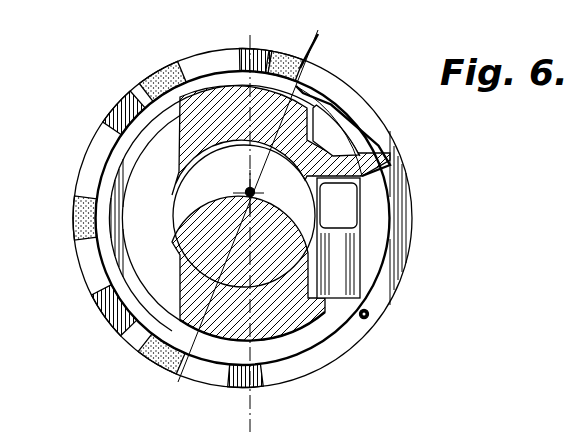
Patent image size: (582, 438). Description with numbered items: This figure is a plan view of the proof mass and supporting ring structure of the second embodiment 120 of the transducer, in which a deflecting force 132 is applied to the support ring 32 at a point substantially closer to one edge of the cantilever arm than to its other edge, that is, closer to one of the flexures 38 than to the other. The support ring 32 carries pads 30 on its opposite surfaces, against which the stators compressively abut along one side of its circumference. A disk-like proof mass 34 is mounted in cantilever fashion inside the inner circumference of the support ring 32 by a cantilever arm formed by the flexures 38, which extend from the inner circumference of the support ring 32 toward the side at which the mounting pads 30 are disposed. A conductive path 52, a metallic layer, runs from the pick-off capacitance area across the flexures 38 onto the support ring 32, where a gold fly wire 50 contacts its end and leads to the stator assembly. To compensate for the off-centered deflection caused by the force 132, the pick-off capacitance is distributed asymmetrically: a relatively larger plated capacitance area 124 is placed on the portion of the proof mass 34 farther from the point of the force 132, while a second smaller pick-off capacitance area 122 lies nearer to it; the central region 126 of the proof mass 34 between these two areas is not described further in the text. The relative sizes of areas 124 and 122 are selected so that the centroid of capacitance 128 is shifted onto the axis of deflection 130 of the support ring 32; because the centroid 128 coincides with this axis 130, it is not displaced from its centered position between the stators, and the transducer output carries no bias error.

The pads 30 is at (162, 66).
The support ring 32 is at (108, 120).
The proof mass 34 is at (152, 233).
The flexures 38 is at (338, 146).
The gold fly wire 50 is at (320, 40).
The conductive path 52 is at (343, 97).
The second embodiment 120 is at (86, 318).
The second smaller pick-off capacitance area 122 is at (263, 314).
The relatively larger plated capacitance area 124 is at (272, 124).
The central bore 126 is at (177, 212).
The centroid of capacitance 128 is at (254, 190).
The axis of deflection 130 is at (230, 257).
The deflecting force 132 is at (370, 314).